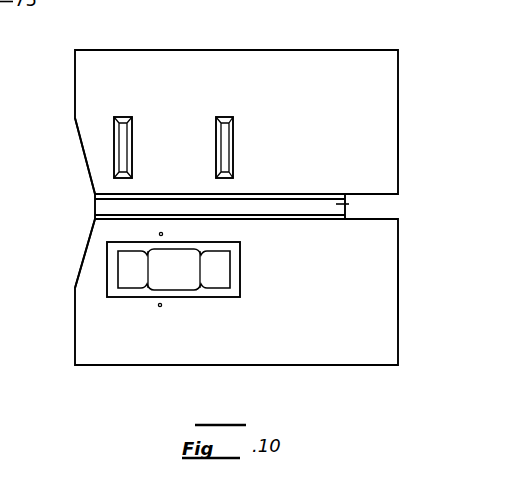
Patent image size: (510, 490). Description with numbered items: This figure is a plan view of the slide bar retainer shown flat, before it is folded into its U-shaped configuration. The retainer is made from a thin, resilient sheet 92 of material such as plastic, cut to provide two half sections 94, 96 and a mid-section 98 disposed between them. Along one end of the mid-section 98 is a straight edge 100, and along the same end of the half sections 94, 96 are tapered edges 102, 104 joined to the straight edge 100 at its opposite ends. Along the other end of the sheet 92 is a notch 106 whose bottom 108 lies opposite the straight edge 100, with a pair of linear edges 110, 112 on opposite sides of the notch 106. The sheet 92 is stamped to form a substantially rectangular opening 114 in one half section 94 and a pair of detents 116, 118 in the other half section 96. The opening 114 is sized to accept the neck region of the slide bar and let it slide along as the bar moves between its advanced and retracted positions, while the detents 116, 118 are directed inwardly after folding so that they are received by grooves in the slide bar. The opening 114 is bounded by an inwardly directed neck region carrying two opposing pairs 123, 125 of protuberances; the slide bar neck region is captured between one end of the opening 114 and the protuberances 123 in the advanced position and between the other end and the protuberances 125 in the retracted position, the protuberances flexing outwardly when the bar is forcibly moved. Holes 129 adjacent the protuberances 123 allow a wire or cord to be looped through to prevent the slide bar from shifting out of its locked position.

The sheet 92 is at (385, 95).
The half section 94 is at (300, 344).
The half section 96 is at (300, 63).
The mid-section 98 is at (340, 204).
The straight edge 100 is at (95, 204).
The tapered edge 102 is at (85, 247).
The tapered edge 104 is at (88, 165).
The notch 106 is at (384, 216).
The notch bottom 108 is at (348, 218).
The linear edge 110 is at (398, 290).
The linear edge 112 is at (398, 131).
The rectangular opening 114 is at (182, 290).
The detent 116 is at (123, 117).
The detent 118 is at (224, 117).
The protuberance pair 123 is at (153, 252).
The protuberance pair 125 is at (205, 286).
The holes 129 is at (163, 234).